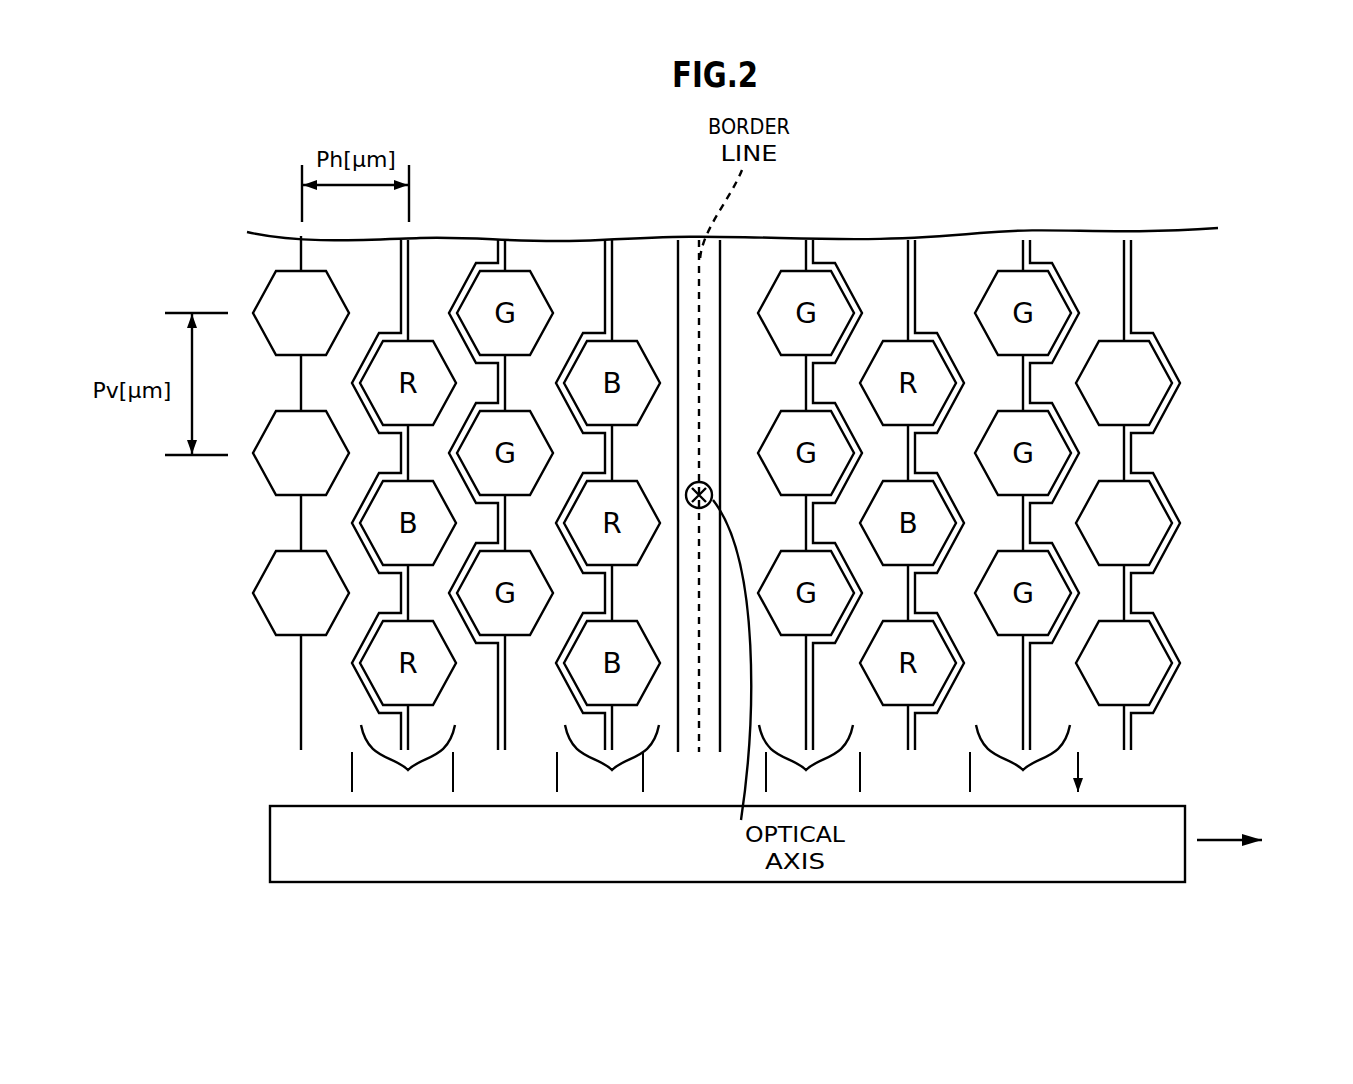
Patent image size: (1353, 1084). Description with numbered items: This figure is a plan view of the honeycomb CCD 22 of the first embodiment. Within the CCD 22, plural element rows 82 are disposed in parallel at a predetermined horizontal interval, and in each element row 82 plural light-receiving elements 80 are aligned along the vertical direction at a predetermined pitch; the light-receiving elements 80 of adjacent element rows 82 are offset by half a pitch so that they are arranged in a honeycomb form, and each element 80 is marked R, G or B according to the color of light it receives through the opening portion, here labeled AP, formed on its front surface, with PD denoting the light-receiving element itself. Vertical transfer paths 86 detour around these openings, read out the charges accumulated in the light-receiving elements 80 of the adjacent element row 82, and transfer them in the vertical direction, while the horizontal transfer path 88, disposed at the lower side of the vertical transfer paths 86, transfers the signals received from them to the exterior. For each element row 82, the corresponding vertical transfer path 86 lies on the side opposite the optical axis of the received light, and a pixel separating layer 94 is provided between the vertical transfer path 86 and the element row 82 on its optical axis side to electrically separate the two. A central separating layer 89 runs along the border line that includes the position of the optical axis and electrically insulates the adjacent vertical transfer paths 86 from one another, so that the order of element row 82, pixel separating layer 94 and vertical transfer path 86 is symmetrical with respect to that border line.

The CCD 22 is at (1243, 262).
The light-receiving element 80 is at (278, 582).
The element row 82 is at (610, 238).
The vertical transfer path 86 is at (715, 764).
The horizontal transfer path 88 is at (947, 860).
The central separating layer 89 is at (690, 248).
The pixel separating layer 94 is at (401, 262).
The aperture AP is at (1107, 421).
The photodiode PD is at (276, 304).